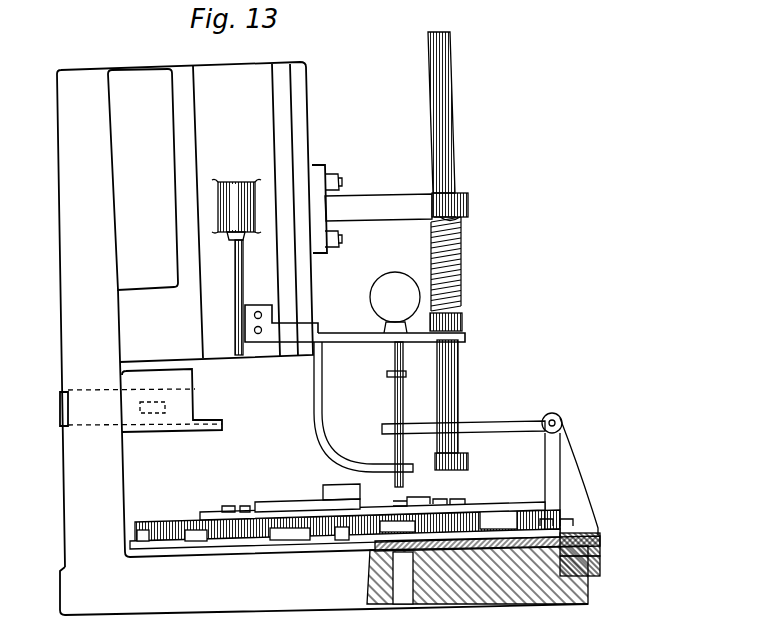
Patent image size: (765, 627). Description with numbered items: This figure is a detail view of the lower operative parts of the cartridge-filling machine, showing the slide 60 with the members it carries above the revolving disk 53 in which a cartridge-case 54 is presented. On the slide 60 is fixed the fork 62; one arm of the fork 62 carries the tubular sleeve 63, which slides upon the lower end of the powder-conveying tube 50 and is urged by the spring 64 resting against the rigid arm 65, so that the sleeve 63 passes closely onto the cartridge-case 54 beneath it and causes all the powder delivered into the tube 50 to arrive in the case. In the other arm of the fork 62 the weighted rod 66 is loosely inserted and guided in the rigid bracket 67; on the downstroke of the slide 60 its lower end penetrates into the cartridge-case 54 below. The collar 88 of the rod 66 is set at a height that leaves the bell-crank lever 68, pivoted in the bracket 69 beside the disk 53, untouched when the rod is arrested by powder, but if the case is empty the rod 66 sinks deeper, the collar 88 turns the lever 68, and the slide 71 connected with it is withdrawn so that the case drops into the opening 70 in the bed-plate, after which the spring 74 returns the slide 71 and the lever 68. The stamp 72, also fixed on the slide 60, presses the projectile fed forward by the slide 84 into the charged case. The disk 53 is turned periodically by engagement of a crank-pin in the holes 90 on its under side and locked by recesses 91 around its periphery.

The slide 60 is at (218, 70).
The powder-conveying tube 50 is at (452, 110).
The rigid arm 65 is at (382, 198).
The spring 64 is at (462, 270).
The stamp 72 is at (235, 275).
The fork 62 is at (340, 333).
The collar 88 is at (387, 374).
The weighted rod 66 is at (404, 394).
The tubular sleeve 63 is at (459, 378).
The rigid bracket 67 is at (314, 404).
The bell-crank lever 68 is at (490, 424).
The slide 84 is at (165, 407).
The bracket 69 is at (572, 468).
The revolving disk 53 is at (153, 530).
The cartridge-case 54 is at (242, 508).
The spring 74 is at (600, 545).
The slide 71 is at (600, 566).
The recesses 91 is at (165, 540).
The holes 90 is at (200, 543).
The opening 70 is at (372, 572).